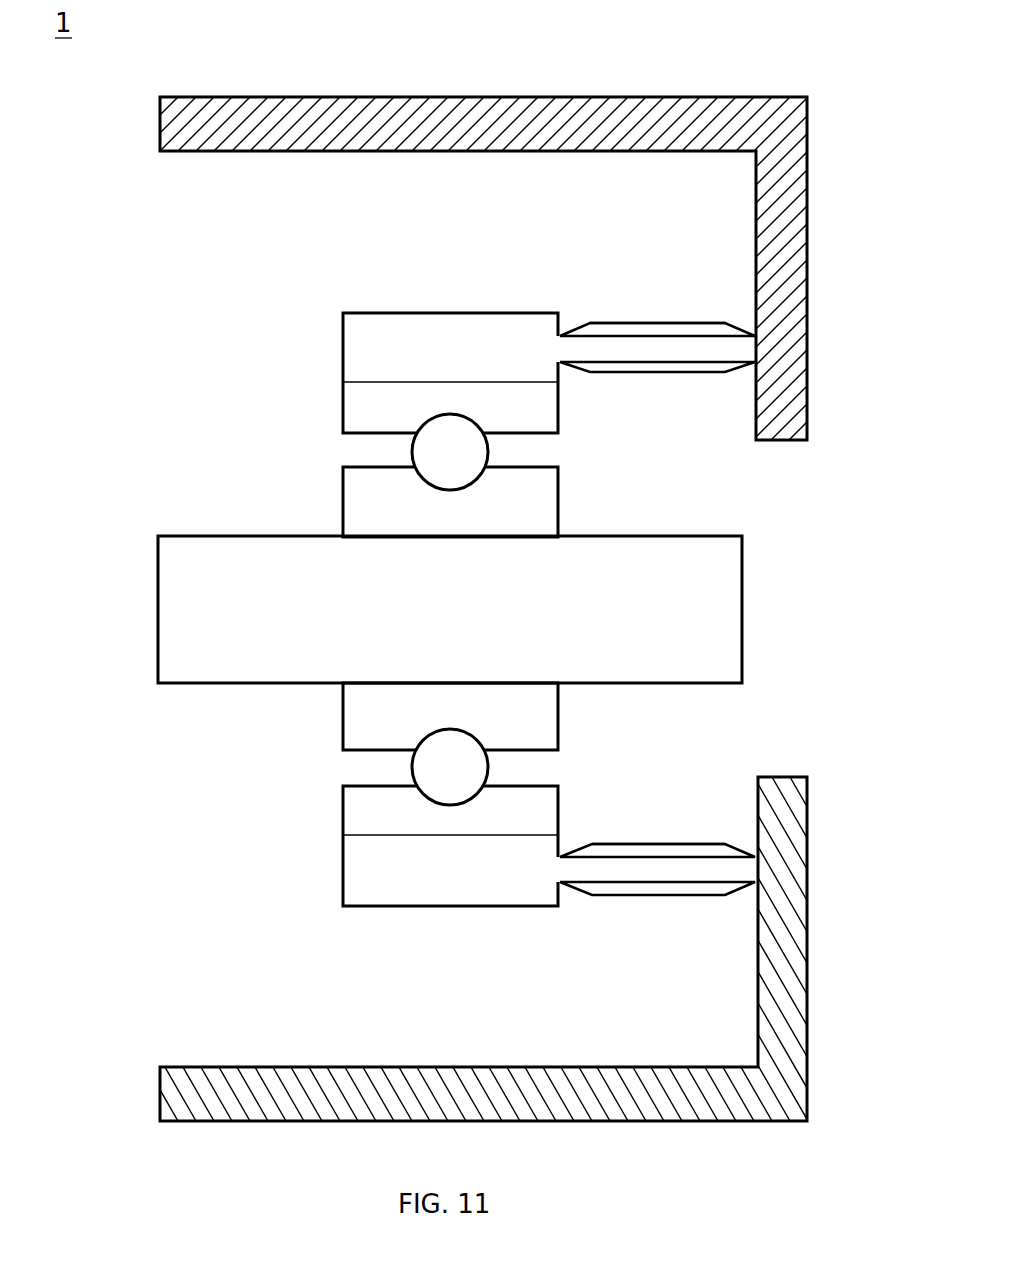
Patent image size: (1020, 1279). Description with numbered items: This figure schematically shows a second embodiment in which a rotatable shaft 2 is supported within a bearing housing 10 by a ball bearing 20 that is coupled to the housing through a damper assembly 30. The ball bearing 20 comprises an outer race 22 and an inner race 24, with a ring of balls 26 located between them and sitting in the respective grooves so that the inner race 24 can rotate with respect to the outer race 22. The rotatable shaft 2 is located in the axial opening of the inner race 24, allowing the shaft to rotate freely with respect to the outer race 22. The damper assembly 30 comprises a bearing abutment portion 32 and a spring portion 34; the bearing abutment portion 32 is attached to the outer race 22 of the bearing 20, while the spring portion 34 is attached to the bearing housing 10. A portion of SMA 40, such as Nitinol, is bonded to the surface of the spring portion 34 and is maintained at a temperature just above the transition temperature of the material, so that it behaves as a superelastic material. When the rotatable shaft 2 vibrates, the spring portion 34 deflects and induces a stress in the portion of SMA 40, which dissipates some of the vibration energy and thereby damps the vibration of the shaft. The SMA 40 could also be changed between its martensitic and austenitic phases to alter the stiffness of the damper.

The rotatable shaft 2 is at (692, 601).
The bearing housing 10 is at (648, 107).
The ball bearing 20 is at (197, 385).
The outer race 22 is at (538, 398).
The inner race 24 is at (525, 495).
The balls 26 is at (412, 452).
The damper assembly 30 is at (512, 330).
The bearing abutment portion 32 is at (407, 327).
The spring portion 34 is at (667, 343).
The portion of SMA 40 is at (652, 323).